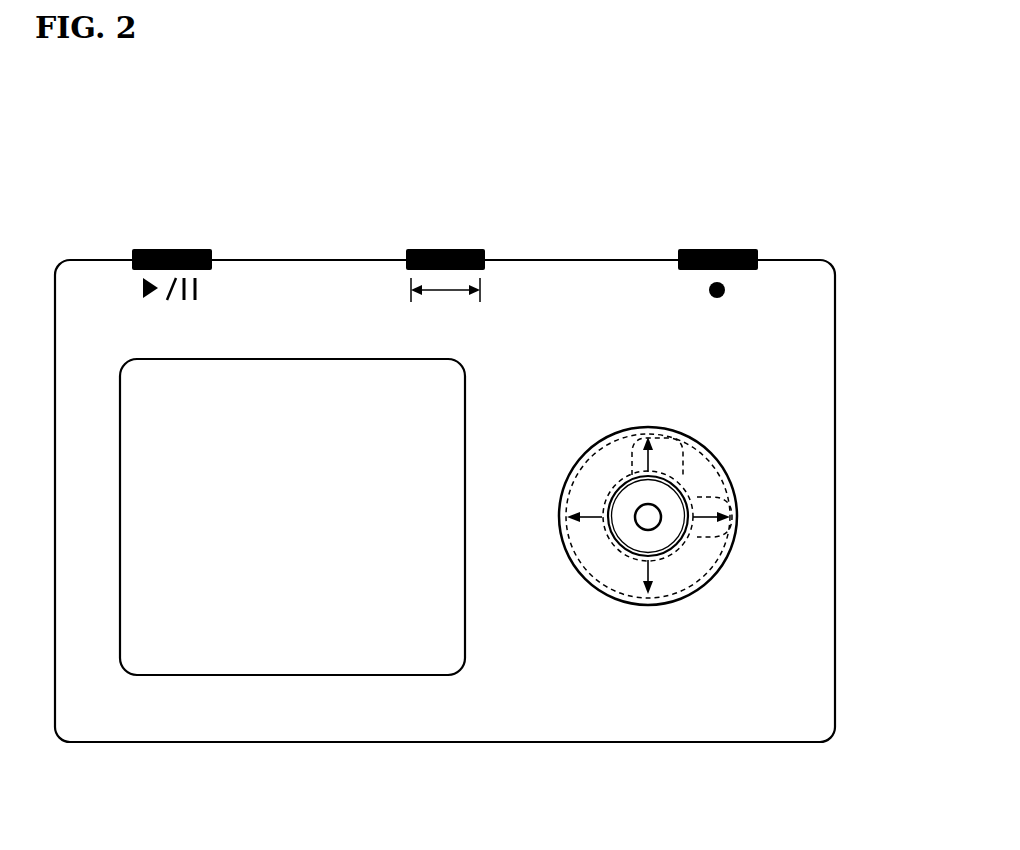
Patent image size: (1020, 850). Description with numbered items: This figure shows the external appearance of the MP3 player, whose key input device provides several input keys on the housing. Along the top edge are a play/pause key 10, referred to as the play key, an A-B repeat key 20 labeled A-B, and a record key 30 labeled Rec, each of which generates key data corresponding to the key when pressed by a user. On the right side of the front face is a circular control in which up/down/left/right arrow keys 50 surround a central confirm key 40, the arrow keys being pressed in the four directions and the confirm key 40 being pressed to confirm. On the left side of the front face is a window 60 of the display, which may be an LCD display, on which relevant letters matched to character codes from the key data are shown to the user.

The play/pause key 10 is at (173, 204).
The A-B repeat key 20 is at (448, 204).
The record key 30 is at (723, 204).
The confirm key 40 is at (678, 487).
The up/down/left/right arrow keys 50 is at (708, 577).
The window 60 is at (360, 675).